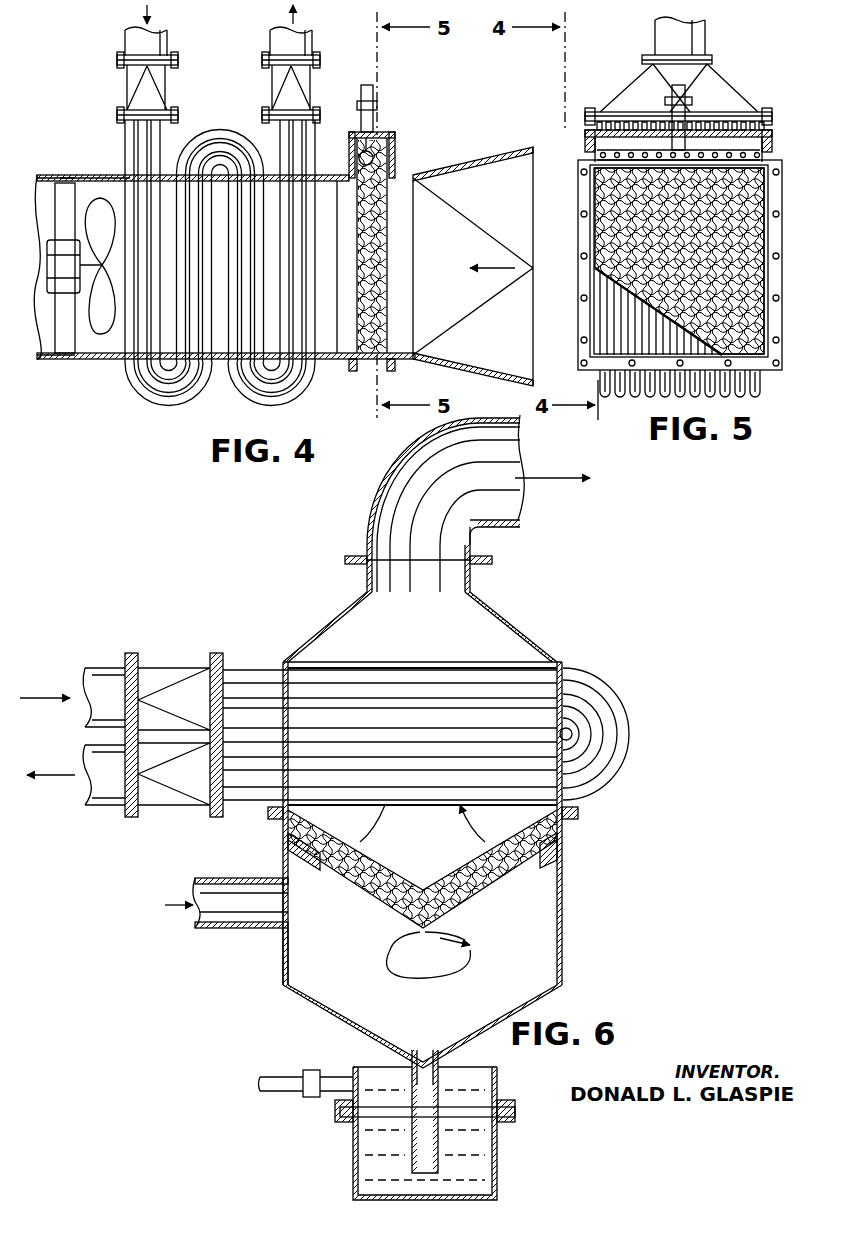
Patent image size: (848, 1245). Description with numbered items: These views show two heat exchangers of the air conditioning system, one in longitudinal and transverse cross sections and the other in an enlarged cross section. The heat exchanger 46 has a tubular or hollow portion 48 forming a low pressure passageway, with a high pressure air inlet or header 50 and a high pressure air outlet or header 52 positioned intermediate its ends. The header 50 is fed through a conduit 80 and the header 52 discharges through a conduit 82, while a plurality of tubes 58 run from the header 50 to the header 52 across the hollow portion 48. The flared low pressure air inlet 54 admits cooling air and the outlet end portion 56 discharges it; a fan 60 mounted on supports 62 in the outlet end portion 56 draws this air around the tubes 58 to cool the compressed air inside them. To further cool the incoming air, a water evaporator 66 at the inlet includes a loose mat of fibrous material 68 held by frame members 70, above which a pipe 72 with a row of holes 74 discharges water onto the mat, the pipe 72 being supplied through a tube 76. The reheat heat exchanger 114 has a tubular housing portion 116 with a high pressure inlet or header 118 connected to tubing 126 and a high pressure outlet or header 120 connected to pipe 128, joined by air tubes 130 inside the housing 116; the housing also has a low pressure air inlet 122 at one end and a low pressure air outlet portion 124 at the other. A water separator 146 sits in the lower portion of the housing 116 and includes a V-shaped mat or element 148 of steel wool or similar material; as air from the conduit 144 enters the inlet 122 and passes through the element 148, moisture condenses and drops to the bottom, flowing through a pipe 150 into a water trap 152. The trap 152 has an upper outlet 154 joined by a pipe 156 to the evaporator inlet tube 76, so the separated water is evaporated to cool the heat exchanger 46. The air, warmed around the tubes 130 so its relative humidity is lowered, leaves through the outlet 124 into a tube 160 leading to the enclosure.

In FIG. 4, the heat exchanger 46 is at (124, 415).
In FIG. 4, the tubular or hollow portion 48 is at (98, 176).
In FIG. 4, the high pressure air inlet or header 50 is at (137, 97).
In FIG. 4, the high pressure air outlet or header 52 is at (278, 80).
In FIG. 5, the high pressure air outlet or header 52 is at (660, 82).
In FIG. 4, the low pressure air inlet 54 is at (485, 162).
In FIG. 4, the outlet end portion 56 is at (48, 359).
In FIG. 4, the conduits or tubes 58 is at (268, 137).
In FIG. 5, the conduits or tubes 58 is at (625, 122).
In FIG. 4, the fan 60 is at (100, 318).
In FIG. 4, the supports 62 is at (72, 212).
In FIG. 5, the water evaporator 66 is at (783, 192).
In FIG. 4, the mat or layer of fibrous material 68 is at (372, 322).
In FIG. 5, the mat or layer of fibrous material 68 is at (773, 270).
In FIG. 4, the frame members 70 is at (355, 283).
In FIG. 5, the frame members 70 is at (638, 250).
In FIG. 4, the pipe or tubular conduit 72 is at (394, 134).
In FIG. 5, the pipe or tubular conduit 72 is at (758, 147).
In FIG. 5, the holes or openings 74 is at (760, 160).
In FIG. 4, the tube or conduit 76 is at (372, 88).
In FIG. 5, the tube or conduit 76 is at (685, 122).
In FIG. 4, the conduit 80 is at (133, 42).
In FIG. 4, the conduit 82 is at (282, 42).
In FIG. 5, the conduit 82 is at (695, 32).
In FIG. 6, the reheat heat exchanger 114 is at (314, 578).
In FIG. 6, the tubular or hollow housing portion 116 is at (585, 787).
In FIG. 6, the high pressure inlet or header 118 is at (165, 670).
In FIG. 6, the high pressure outlet or header 120 is at (180, 808).
In FIG. 6, the low pressure air inlet 122 is at (280, 935).
In FIG. 6, the low pressure air outlet portion 124 is at (462, 572).
In FIG. 6, the conduit or tubing 126 is at (105, 666).
In FIG. 6, the tubing or pipe 128 is at (100, 802).
In FIG. 6, the air tubes or conduits 130 is at (590, 712).
In FIG. 6, the conduit 144 is at (195, 885).
In FIG. 6, the water separator 146 is at (572, 827).
In FIG. 6, the conical or V-shaped mat or element 148 is at (470, 903).
In FIG. 6, the conduit or pipe 150 is at (420, 1140).
In FIG. 6, the water trap 152 is at (350, 1145).
In FIG. 6, the outlet 154 is at (343, 1062).
In FIG. 6, the pipe 156 is at (278, 1075).
In FIG. 6, the tube or conduit 160 is at (368, 508).